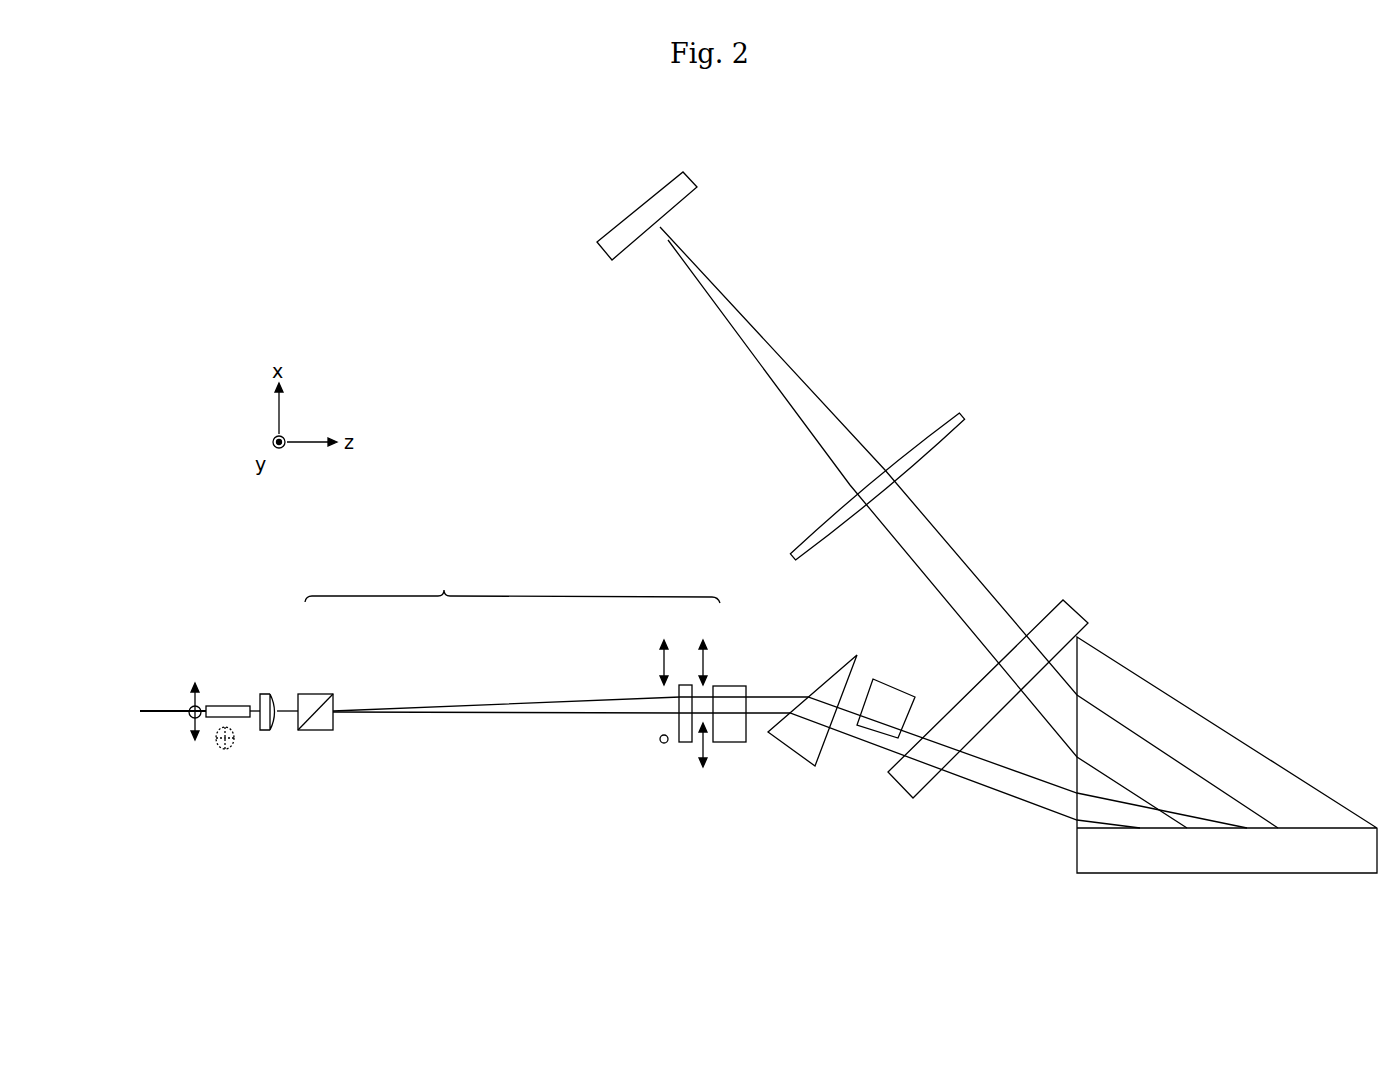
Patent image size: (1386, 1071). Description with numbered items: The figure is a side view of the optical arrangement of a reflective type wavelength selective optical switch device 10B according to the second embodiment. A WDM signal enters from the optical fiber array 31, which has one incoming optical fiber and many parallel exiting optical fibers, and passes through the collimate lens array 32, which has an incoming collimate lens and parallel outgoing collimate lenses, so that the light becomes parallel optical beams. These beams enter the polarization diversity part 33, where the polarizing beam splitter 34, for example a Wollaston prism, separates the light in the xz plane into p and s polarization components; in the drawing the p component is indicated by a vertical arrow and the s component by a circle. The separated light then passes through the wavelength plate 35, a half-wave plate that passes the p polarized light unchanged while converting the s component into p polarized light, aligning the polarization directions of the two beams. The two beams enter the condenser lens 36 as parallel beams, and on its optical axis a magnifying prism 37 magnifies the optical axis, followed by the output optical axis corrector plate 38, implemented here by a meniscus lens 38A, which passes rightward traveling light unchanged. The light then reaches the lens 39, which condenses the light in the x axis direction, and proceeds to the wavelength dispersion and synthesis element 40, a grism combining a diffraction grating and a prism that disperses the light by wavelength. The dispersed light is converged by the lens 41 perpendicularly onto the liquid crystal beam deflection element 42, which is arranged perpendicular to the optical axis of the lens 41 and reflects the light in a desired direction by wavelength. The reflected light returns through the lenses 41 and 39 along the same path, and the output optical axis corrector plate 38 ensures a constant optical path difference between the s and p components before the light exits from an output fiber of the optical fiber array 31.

The wavelength selective optical switch device 10B is at (1191, 411).
The optical fiber array 31 is at (227, 702).
The collimate lens array 32 is at (273, 730).
The polarization diversity part 33 is at (512, 579).
The polarizing beam splitter 34 is at (322, 695).
The wavelength plate 35 is at (687, 685).
The condenser lens 36 is at (733, 742).
The magnifying prism 37 is at (824, 683).
The output optical axis corrector plate 38 is at (914, 669).
The meniscus lens 38A is at (910, 662).
The lens 39 is at (938, 777).
The wavelength dispersion and synthesis element 40 is at (1218, 727).
The lens 41 is at (967, 413).
The liquid crystal beam deflection element 42 is at (658, 192).